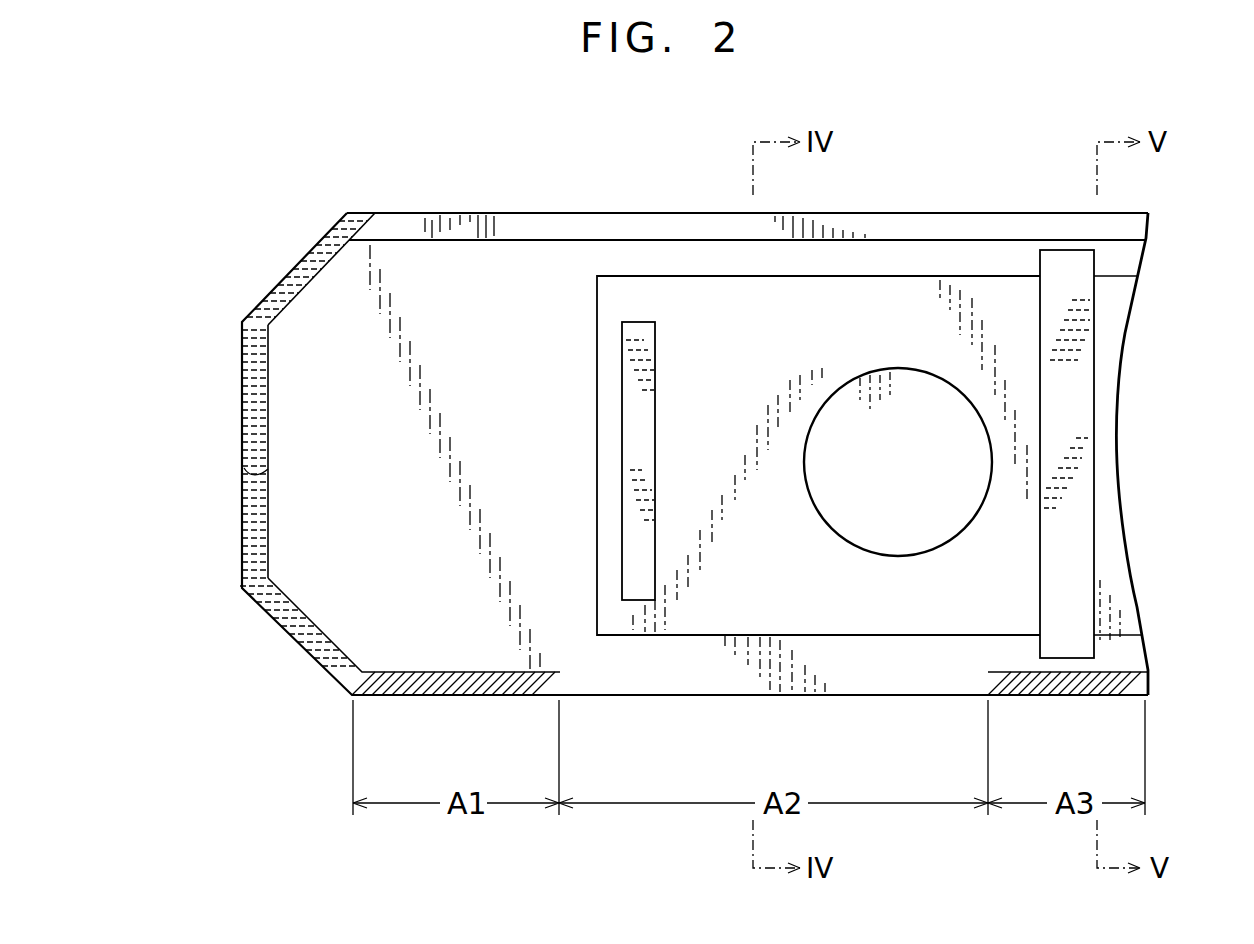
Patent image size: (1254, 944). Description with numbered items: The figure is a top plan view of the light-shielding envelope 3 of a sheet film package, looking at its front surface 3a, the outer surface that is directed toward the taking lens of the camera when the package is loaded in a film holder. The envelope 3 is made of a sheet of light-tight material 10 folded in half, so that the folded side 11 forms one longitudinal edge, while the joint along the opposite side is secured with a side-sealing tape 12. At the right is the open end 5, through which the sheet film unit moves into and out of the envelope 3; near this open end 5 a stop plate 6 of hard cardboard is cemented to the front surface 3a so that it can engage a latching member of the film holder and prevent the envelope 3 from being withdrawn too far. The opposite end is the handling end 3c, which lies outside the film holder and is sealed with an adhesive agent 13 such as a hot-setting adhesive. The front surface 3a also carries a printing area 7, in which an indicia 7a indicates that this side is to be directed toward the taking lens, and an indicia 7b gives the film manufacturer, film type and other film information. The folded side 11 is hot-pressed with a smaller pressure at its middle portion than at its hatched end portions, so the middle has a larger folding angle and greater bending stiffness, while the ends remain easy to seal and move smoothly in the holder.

The light-shielding envelope 3 is at (907, 178).
The front surface 3a is at (410, 258).
The handling end 3c is at (242, 375).
The open end 5 is at (1125, 413).
The stop plate 6 is at (1083, 345).
The printing area 7 is at (700, 300).
The indicia 7a is at (897, 368).
The indicia 7b is at (645, 452).
The sheet of light-tight material 10 is at (319, 298).
The folded side 11 is at (658, 697).
The side-sealing tape 12 is at (480, 222).
The adhesive agent 13 is at (242, 470).